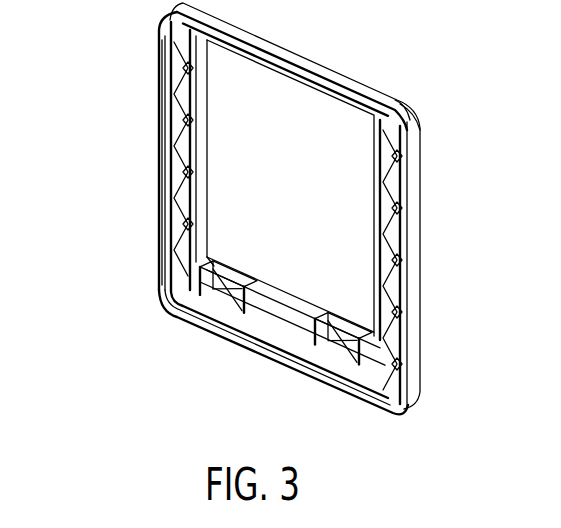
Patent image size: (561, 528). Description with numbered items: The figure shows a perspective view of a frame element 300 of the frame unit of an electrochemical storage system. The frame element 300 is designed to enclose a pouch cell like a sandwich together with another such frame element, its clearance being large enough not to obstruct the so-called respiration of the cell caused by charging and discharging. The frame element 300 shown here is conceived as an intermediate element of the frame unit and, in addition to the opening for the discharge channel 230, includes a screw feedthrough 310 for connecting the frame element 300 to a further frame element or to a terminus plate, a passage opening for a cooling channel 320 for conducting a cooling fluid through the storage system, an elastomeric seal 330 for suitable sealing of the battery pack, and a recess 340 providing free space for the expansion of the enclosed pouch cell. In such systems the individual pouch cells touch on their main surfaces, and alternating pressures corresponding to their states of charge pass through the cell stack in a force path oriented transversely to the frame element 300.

The frame element 300 is at (155, 314).
The screw feedthrough 310 is at (158, 38).
The cooling channel 320 is at (158, 72).
The elastomeric seal 330 is at (202, 332).
The recess 340 is at (302, 216).
The discharge channel 230 is at (280, 352).